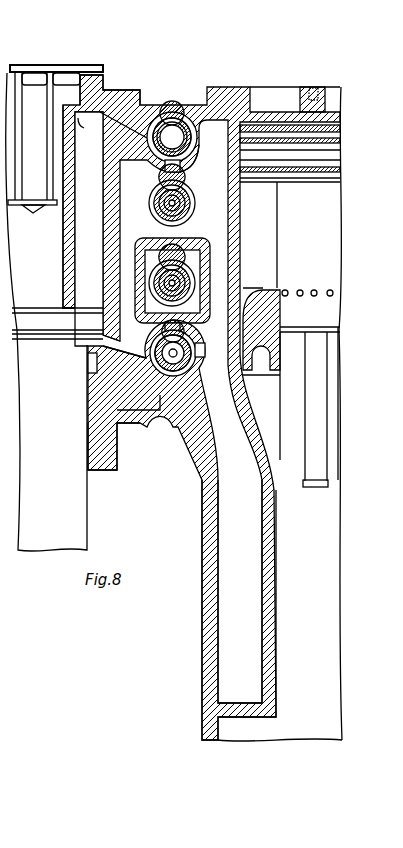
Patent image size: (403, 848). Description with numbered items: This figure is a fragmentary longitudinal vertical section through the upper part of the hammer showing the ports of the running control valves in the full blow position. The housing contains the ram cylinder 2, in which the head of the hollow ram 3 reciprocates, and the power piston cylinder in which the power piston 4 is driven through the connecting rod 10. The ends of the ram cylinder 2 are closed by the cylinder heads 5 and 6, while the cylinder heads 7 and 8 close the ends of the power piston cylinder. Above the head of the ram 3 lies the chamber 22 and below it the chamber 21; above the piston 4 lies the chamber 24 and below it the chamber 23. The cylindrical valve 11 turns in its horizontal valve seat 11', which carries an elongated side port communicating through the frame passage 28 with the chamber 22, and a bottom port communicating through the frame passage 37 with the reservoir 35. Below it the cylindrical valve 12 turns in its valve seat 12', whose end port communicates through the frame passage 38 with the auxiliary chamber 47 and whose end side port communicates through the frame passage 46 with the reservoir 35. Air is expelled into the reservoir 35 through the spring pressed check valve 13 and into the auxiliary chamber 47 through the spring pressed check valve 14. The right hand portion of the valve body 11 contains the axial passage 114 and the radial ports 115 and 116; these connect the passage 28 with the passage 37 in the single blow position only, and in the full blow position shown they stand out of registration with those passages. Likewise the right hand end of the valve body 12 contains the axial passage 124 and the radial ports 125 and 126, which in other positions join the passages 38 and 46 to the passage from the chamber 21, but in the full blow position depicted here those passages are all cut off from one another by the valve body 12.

The ram cylinder 2 is at (206, 484).
The hollow ram 3 is at (54, 308).
The power piston 4 is at (290, 153).
The cylinder head 5 is at (108, 454).
The cylinder head 6 is at (112, 96).
The cylinder head 7 is at (223, 100).
The cylinder head 8 is at (204, 349).
The connecting rod 10 is at (308, 471).
The cylindrical valve 11 is at (172, 108).
The valve seat 11' is at (184, 108).
The cylindrical valve 12 is at (188, 365).
The valve seat 12' is at (166, 390).
The spring pressed check valve 13 is at (195, 208).
The spring pressed check valve 14 is at (200, 252).
The chamber 21 is at (100, 342).
The chamber 22 is at (168, 407).
The chamber 23 is at (295, 280).
The chamber 24 is at (270, 117).
The frame passage 28 is at (123, 126).
The reservoir 35 is at (242, 585).
The frame passage 37 is at (166, 172).
The frame passage 38 is at (145, 318).
The frame passage 46 is at (245, 346).
The auxiliary chamber 47 is at (187, 313).
The axial passage 114 is at (165, 125).
The radial port 115 is at (190, 142).
The radial port 116 is at (187, 164).
The axial passage 124 is at (177, 365).
The radial port 125 is at (103, 398).
The radial port 126 is at (93, 372).